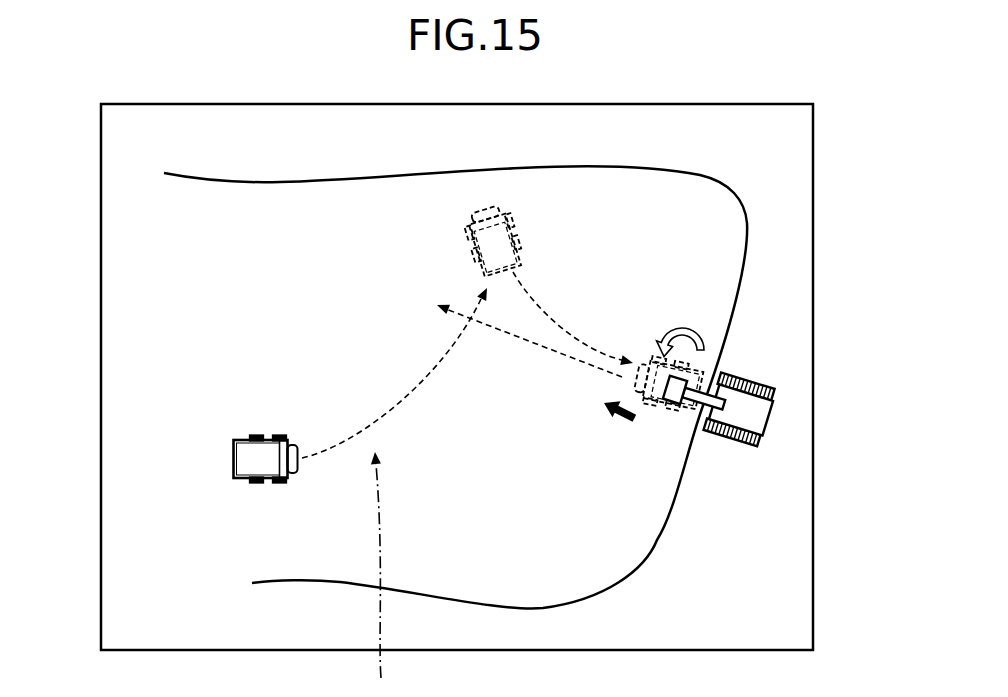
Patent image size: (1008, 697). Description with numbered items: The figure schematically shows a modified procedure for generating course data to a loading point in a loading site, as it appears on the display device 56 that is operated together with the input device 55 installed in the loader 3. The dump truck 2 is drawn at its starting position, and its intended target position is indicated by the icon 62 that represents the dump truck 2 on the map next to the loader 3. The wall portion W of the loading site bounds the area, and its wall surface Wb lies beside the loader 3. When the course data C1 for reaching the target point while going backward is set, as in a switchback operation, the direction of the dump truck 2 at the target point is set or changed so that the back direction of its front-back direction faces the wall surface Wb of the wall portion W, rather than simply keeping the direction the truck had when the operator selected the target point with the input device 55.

The input device 55 is at (457, 354).
The display device 56 is at (710, 104).
The wall portion W is at (478, 174).
The wall surface Wb is at (746, 256).
The dump truck 2 is at (234, 458).
The icon 62 is at (703, 373).
The loader 3 is at (775, 418).
The course data C1 is at (383, 574).